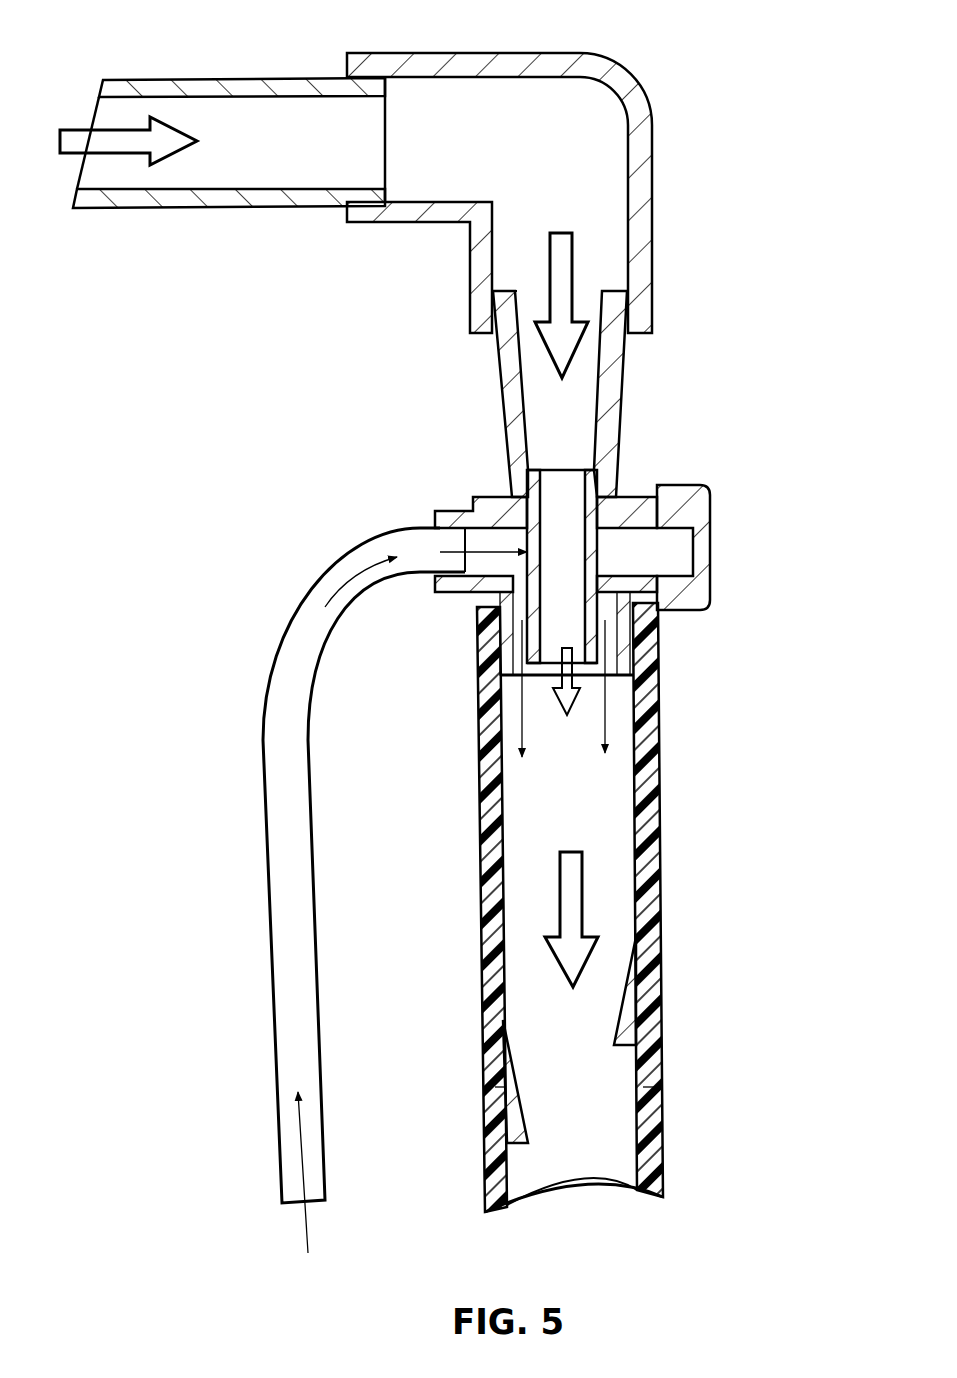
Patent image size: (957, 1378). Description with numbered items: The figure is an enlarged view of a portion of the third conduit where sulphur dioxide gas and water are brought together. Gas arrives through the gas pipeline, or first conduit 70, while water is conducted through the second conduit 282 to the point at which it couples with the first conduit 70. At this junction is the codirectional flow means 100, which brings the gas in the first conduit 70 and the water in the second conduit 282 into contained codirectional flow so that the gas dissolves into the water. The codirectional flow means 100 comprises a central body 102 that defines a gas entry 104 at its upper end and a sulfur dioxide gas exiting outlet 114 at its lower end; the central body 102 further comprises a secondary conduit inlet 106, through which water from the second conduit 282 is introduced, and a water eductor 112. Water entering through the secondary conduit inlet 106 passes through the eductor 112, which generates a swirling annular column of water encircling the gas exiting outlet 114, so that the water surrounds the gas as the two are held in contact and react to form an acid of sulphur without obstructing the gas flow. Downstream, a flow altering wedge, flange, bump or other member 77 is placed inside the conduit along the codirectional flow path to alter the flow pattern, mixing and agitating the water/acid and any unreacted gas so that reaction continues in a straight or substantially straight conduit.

The gas pipeline 70 is at (230, 85).
The codirectional flow means 100 is at (452, 385).
The central body 102 is at (609, 386).
The gas entry 104 is at (583, 522).
The secondary conduit inlet 106 is at (453, 590).
The water eductor 112 is at (623, 668).
The sulfur dioxide gas exiting outlet 114 is at (557, 663).
The flow altering member 77 is at (612, 1037).
The second conduit 282 is at (292, 773).